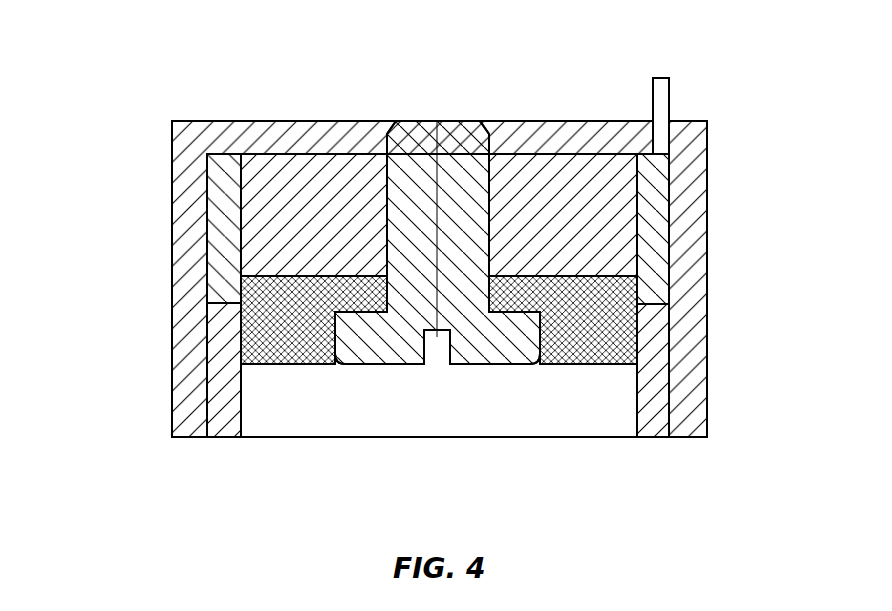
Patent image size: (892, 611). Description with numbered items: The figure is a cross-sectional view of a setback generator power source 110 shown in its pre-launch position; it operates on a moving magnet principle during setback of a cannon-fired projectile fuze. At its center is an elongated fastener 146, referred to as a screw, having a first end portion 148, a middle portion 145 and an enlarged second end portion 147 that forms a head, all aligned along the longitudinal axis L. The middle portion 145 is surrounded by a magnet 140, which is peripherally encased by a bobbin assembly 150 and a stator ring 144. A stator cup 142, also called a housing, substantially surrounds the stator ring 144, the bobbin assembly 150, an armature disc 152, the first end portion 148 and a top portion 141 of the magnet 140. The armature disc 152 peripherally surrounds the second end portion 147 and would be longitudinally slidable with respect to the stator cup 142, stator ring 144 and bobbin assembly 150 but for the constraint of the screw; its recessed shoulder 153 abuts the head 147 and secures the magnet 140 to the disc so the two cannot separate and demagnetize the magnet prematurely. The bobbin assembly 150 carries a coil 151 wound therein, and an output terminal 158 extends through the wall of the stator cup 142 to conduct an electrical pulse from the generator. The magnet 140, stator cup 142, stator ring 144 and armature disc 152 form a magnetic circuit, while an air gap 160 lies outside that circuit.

The setback generator power source 110 is at (146, 80).
The magnet 140 is at (280, 173).
The top portion of magnet 141 is at (322, 150).
The stator cup 142 is at (188, 190).
The stator ring 144 is at (220, 418).
The middle portion 145 is at (415, 217).
The elongated fastener 146 is at (415, 112).
The second end portion 147 is at (508, 347).
The first end portion 148 is at (455, 160).
The bobbin assembly 150 is at (249, 175).
The coil 151 is at (225, 267).
The armature disc 152 is at (600, 353).
The recessed shoulder 153 is at (524, 262).
The output terminal 158 is at (667, 78).
The air gap 160 is at (453, 403).
The longitudinal axis L is at (452, 160).